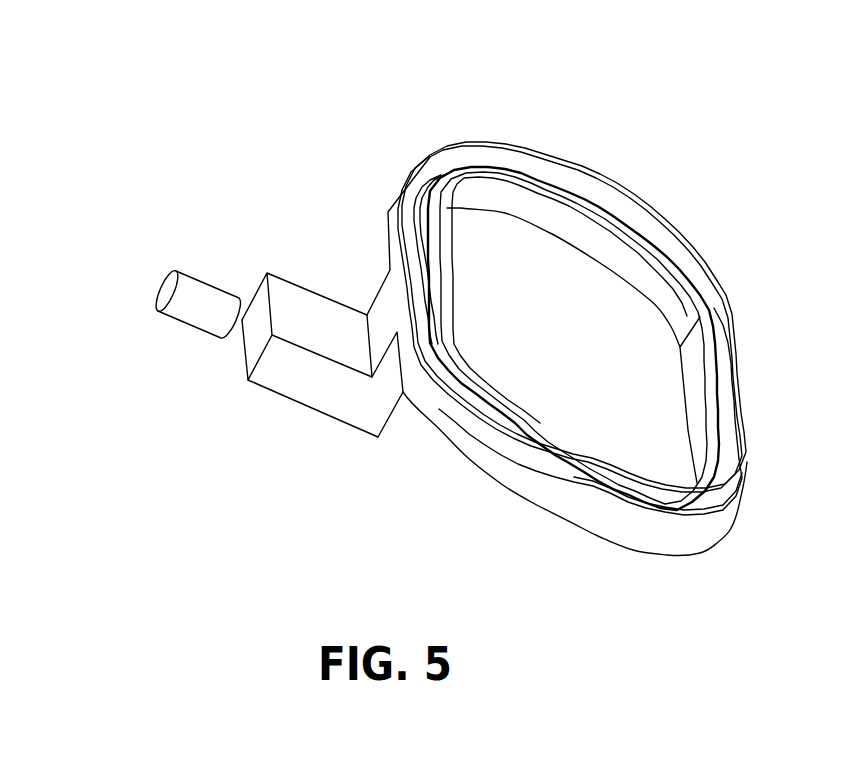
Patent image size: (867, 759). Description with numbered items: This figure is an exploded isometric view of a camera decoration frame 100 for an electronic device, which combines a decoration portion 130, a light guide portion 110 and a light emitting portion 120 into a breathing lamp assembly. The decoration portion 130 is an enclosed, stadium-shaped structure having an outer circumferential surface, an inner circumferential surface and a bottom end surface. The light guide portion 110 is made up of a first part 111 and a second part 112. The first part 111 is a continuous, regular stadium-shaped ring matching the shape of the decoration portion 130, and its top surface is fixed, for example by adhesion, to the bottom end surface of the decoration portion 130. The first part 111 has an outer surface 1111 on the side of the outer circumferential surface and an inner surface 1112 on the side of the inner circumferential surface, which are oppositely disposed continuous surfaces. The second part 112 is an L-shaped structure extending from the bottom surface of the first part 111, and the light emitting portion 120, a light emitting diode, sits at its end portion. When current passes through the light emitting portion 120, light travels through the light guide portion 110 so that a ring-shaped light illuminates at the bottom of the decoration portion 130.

The camera decoration frame 100 is at (137, 39).
The light guide portion 110 is at (308, 173).
The first part 111 is at (398, 219).
The second part 112 is at (352, 312).
The light emitting portion 120 is at (165, 288).
The decoration portion 130 is at (549, 168).
The outer surface 1111 is at (623, 525).
The inner surface 1112 is at (525, 202).